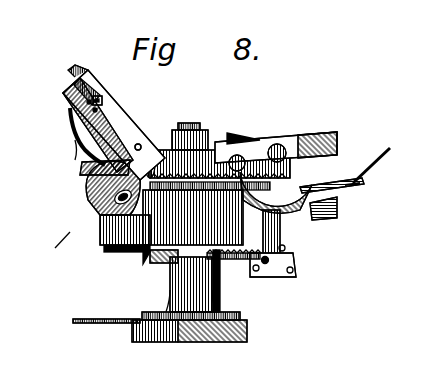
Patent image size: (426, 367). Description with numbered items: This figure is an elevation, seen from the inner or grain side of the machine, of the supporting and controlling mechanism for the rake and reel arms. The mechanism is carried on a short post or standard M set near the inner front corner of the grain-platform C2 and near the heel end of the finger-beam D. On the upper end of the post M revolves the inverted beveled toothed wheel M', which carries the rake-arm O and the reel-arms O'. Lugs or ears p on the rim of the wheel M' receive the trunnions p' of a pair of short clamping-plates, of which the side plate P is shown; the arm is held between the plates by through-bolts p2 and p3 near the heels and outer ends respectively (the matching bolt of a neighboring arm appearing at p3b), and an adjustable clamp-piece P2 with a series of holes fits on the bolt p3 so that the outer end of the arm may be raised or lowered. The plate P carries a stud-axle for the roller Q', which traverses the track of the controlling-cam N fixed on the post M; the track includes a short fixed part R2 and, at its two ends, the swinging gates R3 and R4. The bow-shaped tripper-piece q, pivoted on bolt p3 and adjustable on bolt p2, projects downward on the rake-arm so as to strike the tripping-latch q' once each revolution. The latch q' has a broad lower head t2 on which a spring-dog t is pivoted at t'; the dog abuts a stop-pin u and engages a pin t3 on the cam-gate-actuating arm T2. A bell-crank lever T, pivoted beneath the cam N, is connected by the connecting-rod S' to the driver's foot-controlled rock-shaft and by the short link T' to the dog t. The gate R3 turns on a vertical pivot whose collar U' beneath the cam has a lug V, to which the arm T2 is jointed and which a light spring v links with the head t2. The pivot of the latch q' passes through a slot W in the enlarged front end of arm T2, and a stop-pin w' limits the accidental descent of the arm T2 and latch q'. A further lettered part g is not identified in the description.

The finger-beam D is at (192, 342).
The grain-platform C2 is at (88, 324).
The rake-post M is at (189, 288).
The inverted beveled toothed wheel M' is at (190, 125).
The roller Q' is at (185, 201).
The swinging gate R4 is at (90, 205).
The side plate P is at (114, 122).
The reel-arm O' is at (78, 70).
The through-bolt p3 is at (102, 97).
The adjustable clamp-piece P2 is at (68, 110).
The tripper-piece q is at (210, 217).
The through-bolt p2 is at (82, 170).
The lugs p is at (188, 129).
The trunnions p' is at (165, 135).
The controlling-cam N is at (44, 212).
The short fixed part R2 is at (80, 228).
The front cam-latch R3 is at (108, 250).
The collar-arm V is at (142, 254).
The adjustable collar U' is at (153, 266).
The rake-arm O is at (286, 147).
The pivot p3b is at (282, 142).
The pin t3 is at (276, 199).
The bell-crank lever T is at (332, 196).
The short link-rod T' is at (338, 215).
The connecting-rod S' is at (379, 165).
The tripping-latch q' is at (357, 166).
The slot W is at (250, 272).
The stop-pin w' is at (234, 252).
The light coiled spring v is at (212, 281).
The cam-gate-actuating arm T2 is at (245, 290).
The tripping-latch head t2 is at (278, 280).
The pin g is at (252, 285).
The stop-pin u is at (292, 270).
The pivot t' is at (301, 250).
The trip-dog t is at (292, 238).